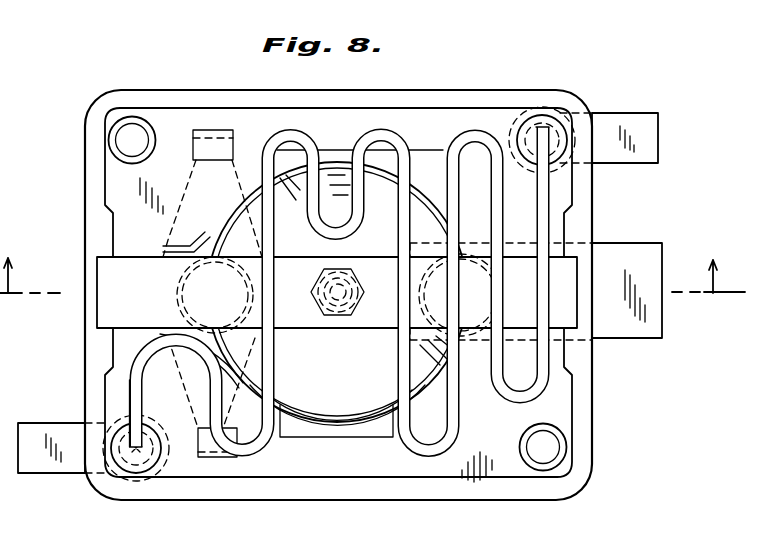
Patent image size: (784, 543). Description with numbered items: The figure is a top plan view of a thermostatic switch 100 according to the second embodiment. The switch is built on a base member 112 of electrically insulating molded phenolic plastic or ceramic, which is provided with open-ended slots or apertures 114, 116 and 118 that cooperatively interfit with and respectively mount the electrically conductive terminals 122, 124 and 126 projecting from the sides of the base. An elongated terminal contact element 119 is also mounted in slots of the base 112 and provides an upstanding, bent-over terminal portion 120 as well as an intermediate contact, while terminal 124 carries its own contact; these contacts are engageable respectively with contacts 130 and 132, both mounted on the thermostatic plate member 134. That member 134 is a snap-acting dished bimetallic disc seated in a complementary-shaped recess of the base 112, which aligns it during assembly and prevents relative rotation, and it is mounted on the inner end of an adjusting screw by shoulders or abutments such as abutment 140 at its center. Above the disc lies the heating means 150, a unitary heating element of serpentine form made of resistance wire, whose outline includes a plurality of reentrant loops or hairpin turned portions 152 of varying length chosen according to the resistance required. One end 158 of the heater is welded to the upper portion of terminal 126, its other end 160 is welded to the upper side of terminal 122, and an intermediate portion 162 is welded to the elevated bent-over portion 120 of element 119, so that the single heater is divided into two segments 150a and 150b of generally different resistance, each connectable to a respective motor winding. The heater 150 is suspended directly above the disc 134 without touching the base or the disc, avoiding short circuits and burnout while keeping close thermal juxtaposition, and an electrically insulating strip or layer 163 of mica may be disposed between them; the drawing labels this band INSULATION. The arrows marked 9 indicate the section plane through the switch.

The thermostatic switch 100 is at (490, 67).
The base member 112 is at (184, 92).
The open-ended slot or aperture 114 is at (560, 100).
The open-ended slot or aperture 116 is at (527, 337).
The open-ended slot or aperture 118 is at (128, 480).
The terminal contact element 119 is at (170, 230).
The bent-over terminal portion 120 is at (203, 438).
The terminal 122 is at (630, 113).
The terminal 124 is at (624, 328).
The terminal 126 is at (66, 470).
The contact 130 is at (204, 263).
The contact 132 is at (466, 262).
The thermostatic plate member 134 is at (338, 420).
The shoulder or abutment 140 is at (352, 283).
The heating means 150 is at (363, 126).
The heater element portion 150a is at (118, 398).
The heater element portion 150b is at (326, 243).
The reentrant loop or hairpin turned portion 152 is at (340, 240).
The heater element end 158 is at (118, 420).
The heater element end 160 is at (556, 182).
The heater element intermediate portion 162 is at (253, 450).
The electrically insulating strip or layer 163 is at (290, 318).
The section line 9- 9 is at (372, 295).
The insulation INSULATION is at (570, 273).